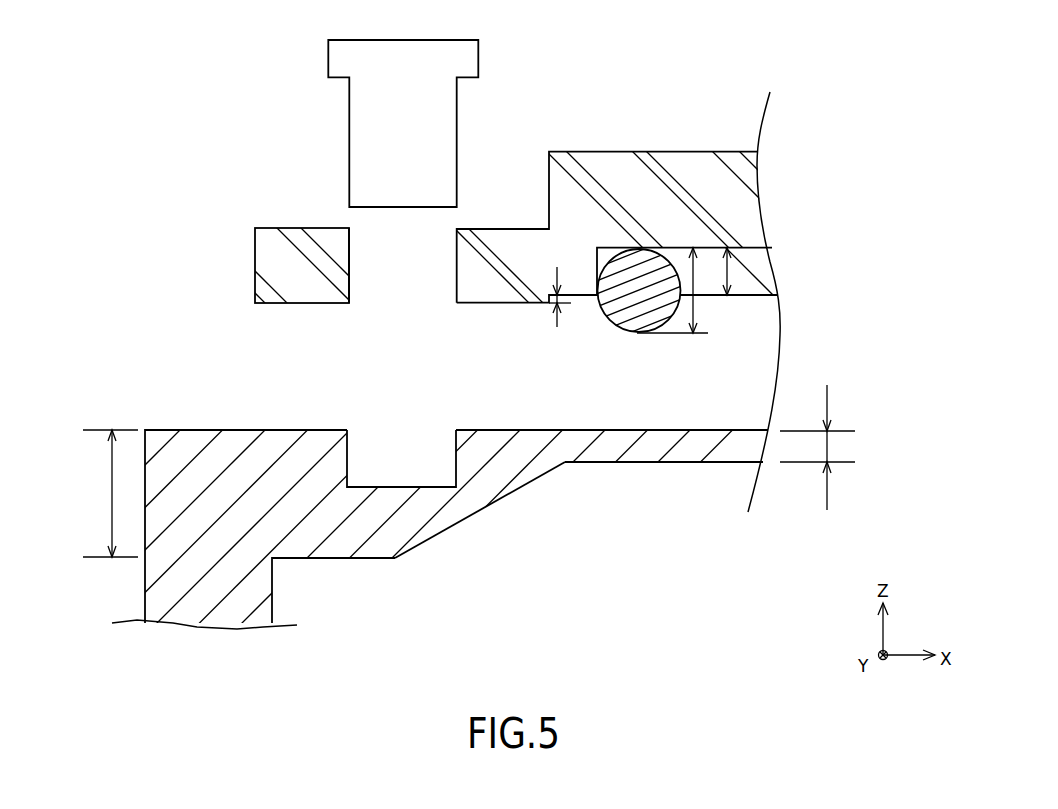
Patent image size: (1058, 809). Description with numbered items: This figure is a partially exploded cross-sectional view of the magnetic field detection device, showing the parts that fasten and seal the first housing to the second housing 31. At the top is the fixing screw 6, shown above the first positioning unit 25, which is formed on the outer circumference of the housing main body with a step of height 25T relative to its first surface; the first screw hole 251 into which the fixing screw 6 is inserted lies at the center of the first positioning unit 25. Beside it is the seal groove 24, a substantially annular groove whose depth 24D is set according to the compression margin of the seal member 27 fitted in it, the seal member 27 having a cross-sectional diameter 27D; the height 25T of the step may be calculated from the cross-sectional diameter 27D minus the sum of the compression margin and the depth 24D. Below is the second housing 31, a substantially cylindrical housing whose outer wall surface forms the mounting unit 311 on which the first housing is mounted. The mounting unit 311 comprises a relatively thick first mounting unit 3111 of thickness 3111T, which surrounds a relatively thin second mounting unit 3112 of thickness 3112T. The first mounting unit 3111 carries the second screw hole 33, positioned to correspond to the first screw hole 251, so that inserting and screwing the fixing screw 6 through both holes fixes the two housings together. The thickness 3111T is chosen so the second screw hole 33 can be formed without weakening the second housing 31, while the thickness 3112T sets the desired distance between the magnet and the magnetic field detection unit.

The fixing screw 6 is at (348, 107).
The first positioning unit 25 is at (255, 263).
The first screw hole 251 is at (382, 253).
The seal groove 24 is at (607, 253).
The seal member 27 is at (640, 272).
The depth of the seal groove 24D is at (727, 272).
The cross-sectional diameter of the seal member 27D is at (693, 308).
The height of the step 25T is at (558, 297).
The second housing 31 is at (263, 613).
The second screw hole 33 is at (405, 450).
The mounting unit 311 is at (581, 479).
The first mounting unit 3111 is at (418, 517).
The second mounting unit 3112 is at (692, 450).
The thickness of the first mounting unit 3111T is at (90, 493).
The thickness of the second mounting unit 3112T is at (836, 447).